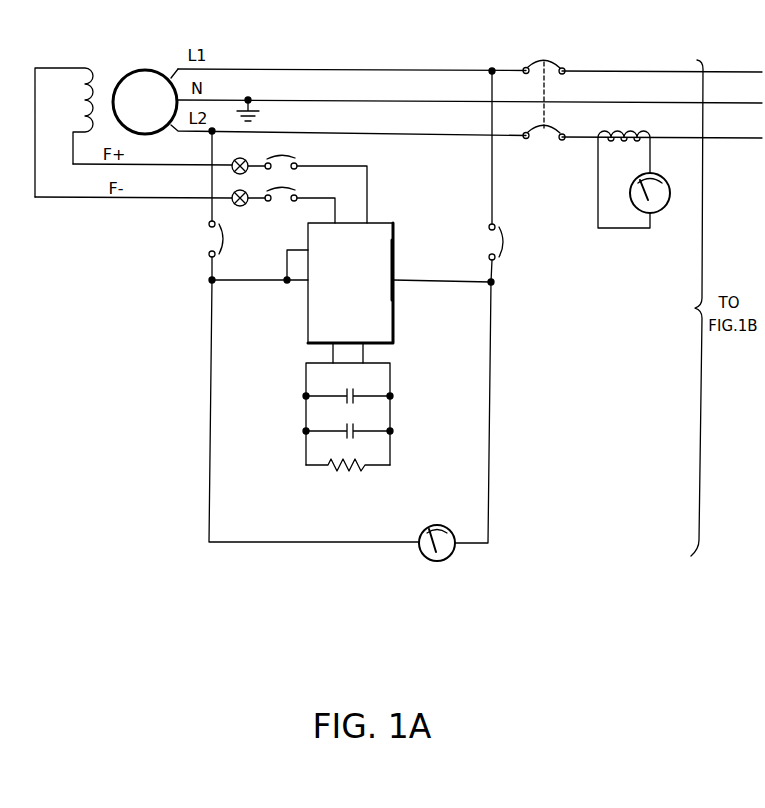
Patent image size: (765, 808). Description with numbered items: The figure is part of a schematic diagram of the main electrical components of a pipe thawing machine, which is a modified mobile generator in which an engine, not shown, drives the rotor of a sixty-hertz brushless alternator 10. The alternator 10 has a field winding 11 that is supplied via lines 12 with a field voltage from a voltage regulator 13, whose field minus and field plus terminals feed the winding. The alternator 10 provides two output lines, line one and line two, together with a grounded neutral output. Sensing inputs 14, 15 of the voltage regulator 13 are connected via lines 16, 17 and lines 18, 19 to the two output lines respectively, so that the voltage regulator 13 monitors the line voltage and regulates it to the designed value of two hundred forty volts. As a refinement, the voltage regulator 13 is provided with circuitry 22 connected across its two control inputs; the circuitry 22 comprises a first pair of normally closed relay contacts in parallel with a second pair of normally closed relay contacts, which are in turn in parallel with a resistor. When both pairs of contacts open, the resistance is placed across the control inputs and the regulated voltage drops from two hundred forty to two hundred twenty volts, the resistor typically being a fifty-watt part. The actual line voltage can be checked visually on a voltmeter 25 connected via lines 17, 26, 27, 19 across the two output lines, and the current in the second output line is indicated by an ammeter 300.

The alternator 10 is at (155, 58).
The field winding 11 is at (97, 74).
The lines 12 is at (88, 167).
The voltage regulator 13 is at (386, 219).
The sensing input 14 is at (388, 276).
The sensing input 15 is at (312, 279).
The line 16 is at (455, 286).
The line 17 is at (492, 177).
The line 18 is at (233, 280).
The line 19 is at (212, 211).
The circuitry 22 is at (394, 409).
The voltmeter 25 is at (437, 562).
The line 26 is at (494, 432).
The line 27 is at (207, 489).
The ammeter 300 is at (668, 209).